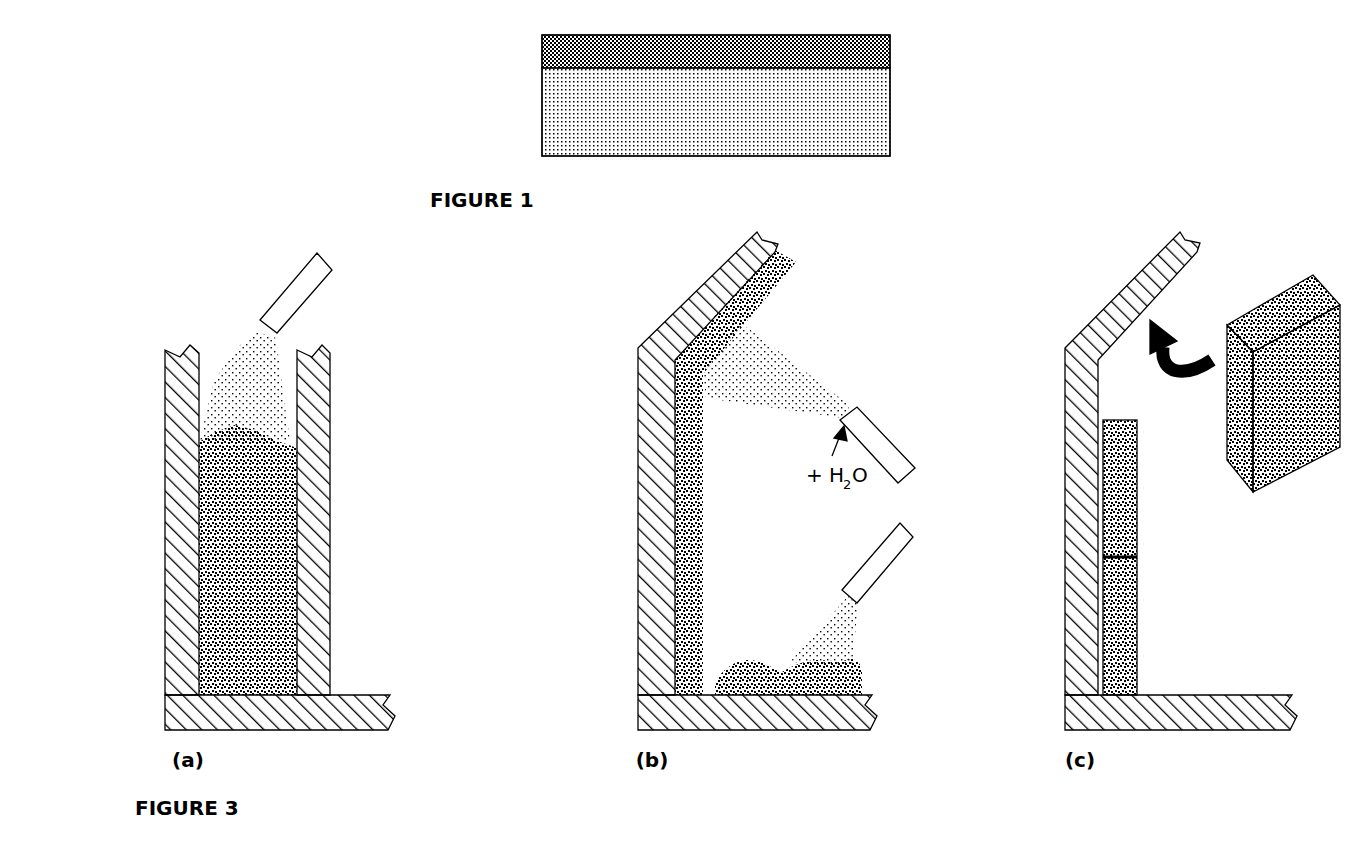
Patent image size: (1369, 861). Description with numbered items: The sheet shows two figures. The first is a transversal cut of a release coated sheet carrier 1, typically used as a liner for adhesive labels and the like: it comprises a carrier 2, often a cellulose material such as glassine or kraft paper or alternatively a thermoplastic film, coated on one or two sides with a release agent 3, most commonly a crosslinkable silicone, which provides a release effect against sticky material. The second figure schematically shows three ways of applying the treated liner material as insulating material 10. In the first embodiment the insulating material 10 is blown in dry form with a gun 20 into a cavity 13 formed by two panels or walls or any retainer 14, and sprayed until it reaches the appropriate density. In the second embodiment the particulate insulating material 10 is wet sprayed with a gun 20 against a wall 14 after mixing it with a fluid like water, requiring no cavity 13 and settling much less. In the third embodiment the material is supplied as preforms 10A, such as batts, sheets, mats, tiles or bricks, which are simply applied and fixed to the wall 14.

In FIG. 1, the release coated sheet carrier 1 is at (910, 105).
In FIG. 1, the carrier 2 is at (542, 110).
In FIG. 1, the release agent 3 is at (542, 50).
In FIG. 3, the insulating material 10 is at (255, 348).
In FIG. 3, the preforms 10A is at (1137, 487).
In FIG. 3, the cavity 13 is at (213, 365).
In FIG. 3, the wall 14 is at (165, 520).
In FIG. 3, the gun 20 is at (287, 287).